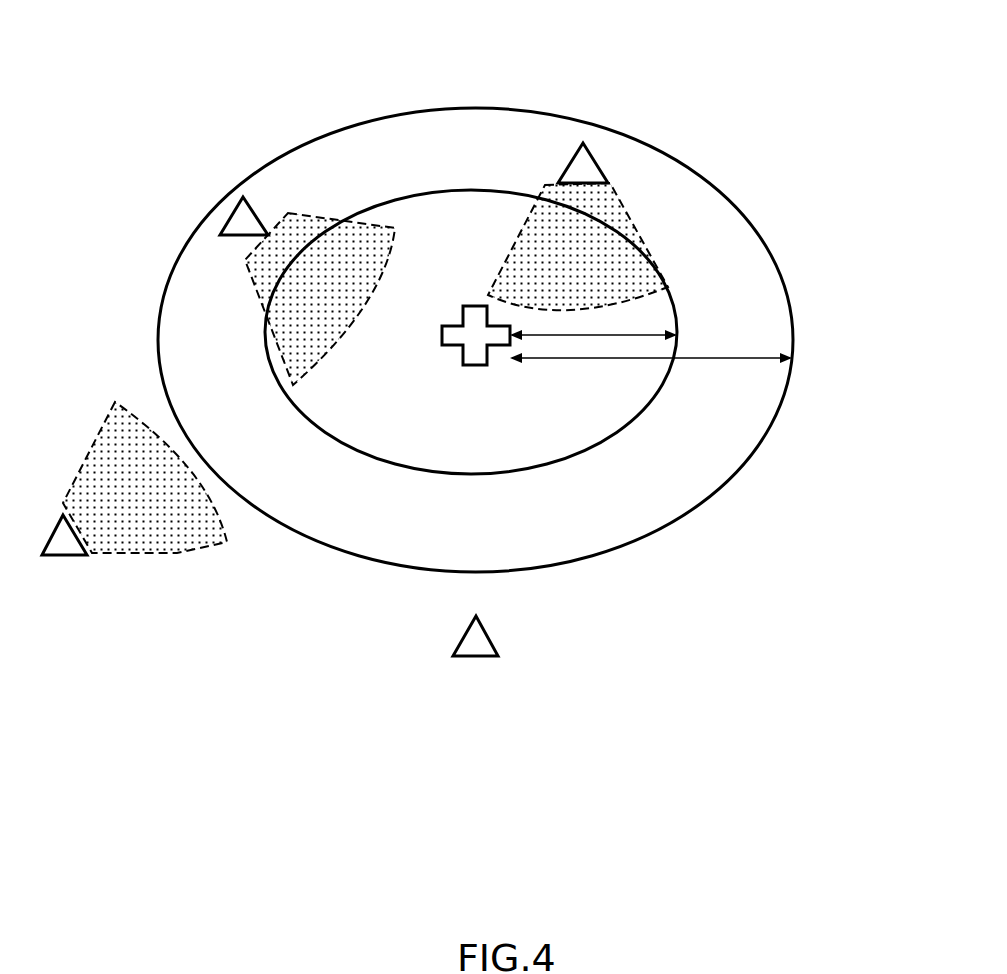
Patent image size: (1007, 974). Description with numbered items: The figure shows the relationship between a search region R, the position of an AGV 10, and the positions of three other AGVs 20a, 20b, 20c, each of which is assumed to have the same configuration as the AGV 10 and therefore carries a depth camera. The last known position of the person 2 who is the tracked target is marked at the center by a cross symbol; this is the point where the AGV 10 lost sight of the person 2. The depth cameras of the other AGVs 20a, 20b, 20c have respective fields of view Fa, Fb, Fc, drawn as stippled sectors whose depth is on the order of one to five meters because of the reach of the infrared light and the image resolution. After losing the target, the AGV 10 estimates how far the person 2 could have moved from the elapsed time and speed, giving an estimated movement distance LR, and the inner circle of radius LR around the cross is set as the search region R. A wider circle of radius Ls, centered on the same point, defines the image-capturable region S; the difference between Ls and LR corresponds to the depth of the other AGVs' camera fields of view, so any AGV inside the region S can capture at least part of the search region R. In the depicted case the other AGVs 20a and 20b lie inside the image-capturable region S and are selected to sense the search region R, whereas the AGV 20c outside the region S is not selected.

The person 2 is at (477, 307).
The AGV 10 is at (480, 657).
The other AGV 20a is at (583, 143).
The other AGV 20b is at (233, 217).
The other AGV 20c is at (73, 557).
The field of view Fa is at (613, 217).
The field of view Fb is at (318, 218).
The field of view Fc is at (182, 530).
The search region R is at (560, 468).
The image-capturable region S is at (677, 522).
The estimated movement distance LR is at (643, 333).
The radius of image-capturable region Ls is at (705, 363).